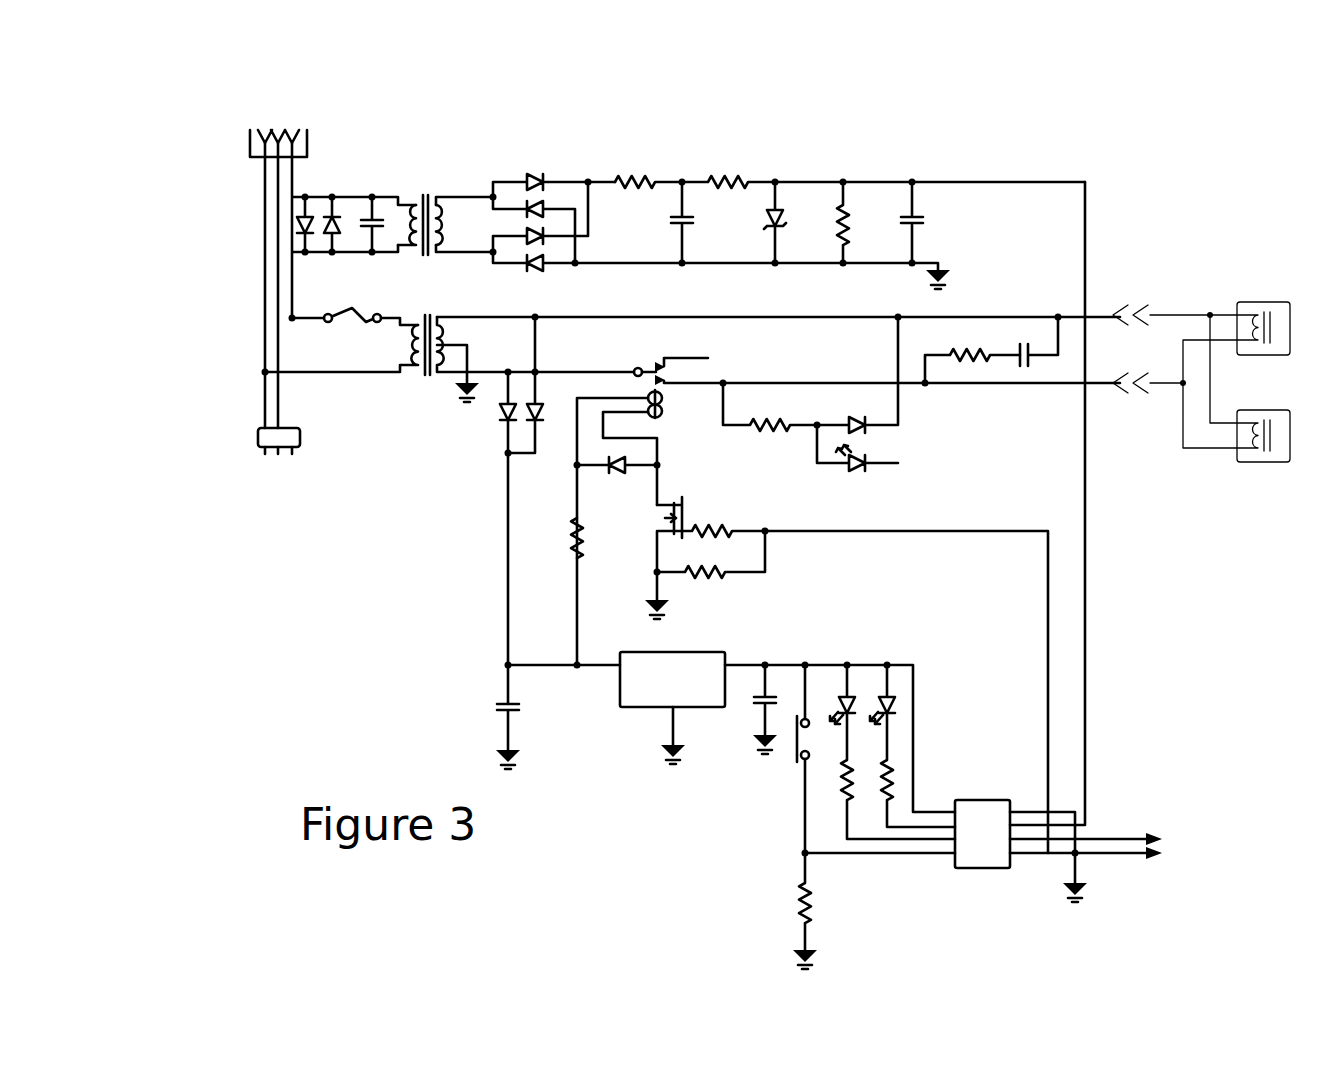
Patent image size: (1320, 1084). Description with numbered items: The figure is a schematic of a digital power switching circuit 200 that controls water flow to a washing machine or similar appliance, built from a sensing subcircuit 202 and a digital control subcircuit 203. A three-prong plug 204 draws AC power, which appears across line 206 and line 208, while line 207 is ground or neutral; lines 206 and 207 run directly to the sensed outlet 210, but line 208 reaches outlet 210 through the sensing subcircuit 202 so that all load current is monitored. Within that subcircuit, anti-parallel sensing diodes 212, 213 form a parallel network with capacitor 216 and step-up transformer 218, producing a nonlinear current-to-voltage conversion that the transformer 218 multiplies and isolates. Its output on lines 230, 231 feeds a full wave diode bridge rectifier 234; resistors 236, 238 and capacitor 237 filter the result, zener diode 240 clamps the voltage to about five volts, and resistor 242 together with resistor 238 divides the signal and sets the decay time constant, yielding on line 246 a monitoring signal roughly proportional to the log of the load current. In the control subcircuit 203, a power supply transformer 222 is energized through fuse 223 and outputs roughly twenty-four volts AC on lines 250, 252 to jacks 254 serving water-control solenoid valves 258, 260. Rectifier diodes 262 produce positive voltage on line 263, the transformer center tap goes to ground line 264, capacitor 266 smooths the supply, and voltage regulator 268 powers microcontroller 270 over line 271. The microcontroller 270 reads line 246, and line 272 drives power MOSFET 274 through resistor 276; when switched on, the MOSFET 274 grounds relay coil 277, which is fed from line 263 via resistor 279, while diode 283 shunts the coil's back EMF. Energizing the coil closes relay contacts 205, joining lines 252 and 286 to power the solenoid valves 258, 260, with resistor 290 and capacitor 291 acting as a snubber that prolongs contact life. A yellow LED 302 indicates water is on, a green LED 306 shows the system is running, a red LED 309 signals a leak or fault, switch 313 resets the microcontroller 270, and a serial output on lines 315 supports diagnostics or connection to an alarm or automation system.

The circuit 200 is at (410, 523).
The sensing subcircuit 202 is at (416, 160).
The digital control subcircuit 203 is at (461, 598).
The three-prong plug 204 is at (270, 437).
The relay 205 is at (670, 358).
The line 206 is at (265, 345).
The line 207 is at (283, 385).
The line 208 is at (297, 412).
The sensed outlet 210 is at (250, 145).
The sensing diode 212 is at (300, 215).
The sensing diode 213 is at (322, 235).
The capacitor 216 is at (367, 214).
The step-up transformer 218 is at (425, 195).
The power supply transformer 222 is at (425, 322).
The fuse 223 is at (345, 318).
The line 230 is at (445, 200).
The line 231 is at (445, 253).
The full wave diode bridge rectifier 234 is at (573, 174).
The resistor 236 is at (640, 176).
The capacitor 237 is at (667, 220).
The resistor 238 is at (727, 178).
The zener diode 240 is at (770, 220).
The resistor 242 is at (835, 215).
The line 246 is at (1087, 488).
The line 250 is at (567, 310).
The line 252 is at (567, 370).
The jacks 254 is at (1147, 289).
The water-control solenoid valve 258 is at (1265, 305).
The water-control solenoid valve 260 is at (1277, 460).
The rectifier diodes 262 is at (494, 452).
The line 263 is at (508, 640).
The ground line 264 is at (457, 380).
The capacitor 266 is at (494, 705).
The voltage regulator 268 is at (658, 652).
The microcontroller 270 is at (978, 808).
The line 271 is at (775, 665).
The line 272 is at (880, 537).
The power MOSFET 274 is at (685, 515).
The resistor 276 is at (720, 540).
The relay coil 277 is at (652, 418).
The resistor 279 is at (568, 545).
The diode 283 is at (615, 478).
The line 286 is at (780, 383).
The resistor 290 is at (970, 362).
The capacitor 291 is at (1037, 365).
The yellow LED 302 is at (860, 470).
The green LED 306 is at (850, 700).
The red LED 309 is at (898, 704).
The switch 313 is at (798, 752).
The RS-232 serial output lines 315 is at (1168, 858).